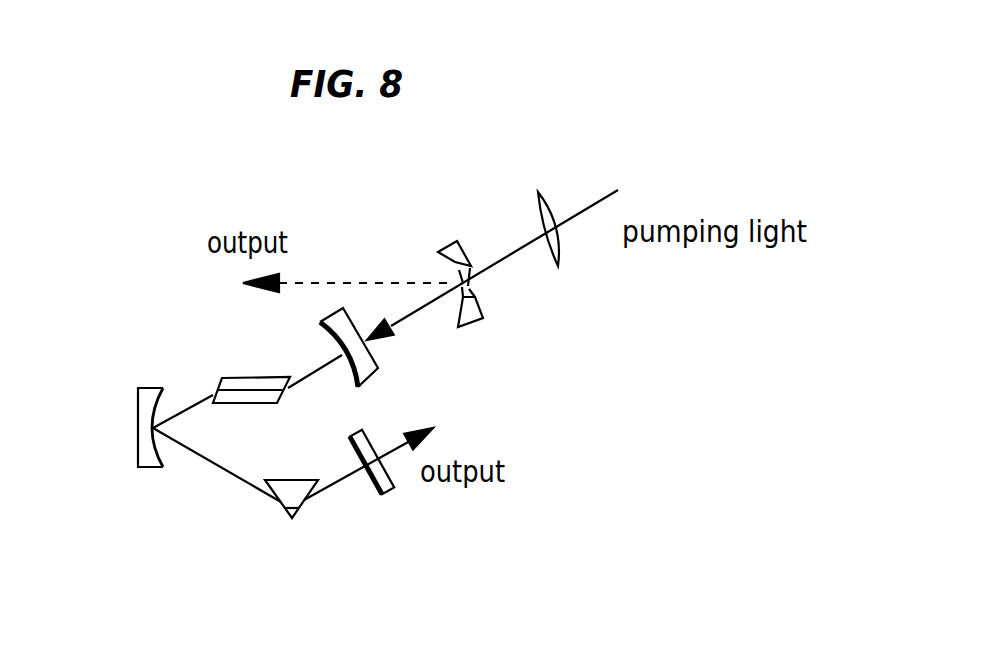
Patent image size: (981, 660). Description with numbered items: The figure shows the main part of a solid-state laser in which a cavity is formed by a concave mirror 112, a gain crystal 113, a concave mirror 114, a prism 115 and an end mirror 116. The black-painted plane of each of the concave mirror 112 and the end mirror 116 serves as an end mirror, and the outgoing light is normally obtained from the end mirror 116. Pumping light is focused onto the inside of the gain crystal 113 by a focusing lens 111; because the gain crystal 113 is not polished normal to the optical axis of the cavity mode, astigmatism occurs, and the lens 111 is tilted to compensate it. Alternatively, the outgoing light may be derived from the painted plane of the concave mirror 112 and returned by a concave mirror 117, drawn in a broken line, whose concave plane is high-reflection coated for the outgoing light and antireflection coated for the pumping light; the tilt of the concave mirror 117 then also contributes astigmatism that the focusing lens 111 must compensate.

The focusing lens 111 is at (553, 201).
The concave mirror 112 is at (377, 368).
The gain crystal 113 is at (263, 383).
The concave mirror 114 is at (138, 448).
The prism 115 is at (292, 497).
The end mirror 116 is at (388, 495).
The concave mirror 117 is at (457, 243).